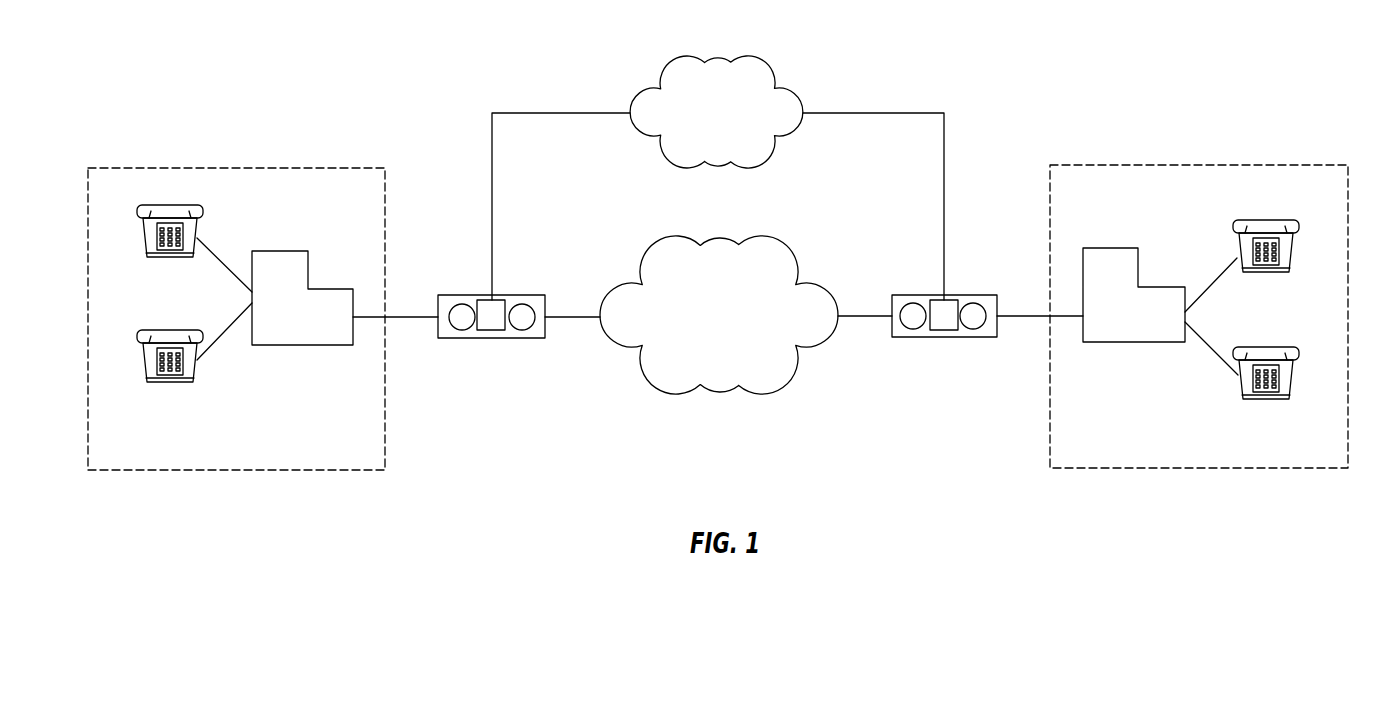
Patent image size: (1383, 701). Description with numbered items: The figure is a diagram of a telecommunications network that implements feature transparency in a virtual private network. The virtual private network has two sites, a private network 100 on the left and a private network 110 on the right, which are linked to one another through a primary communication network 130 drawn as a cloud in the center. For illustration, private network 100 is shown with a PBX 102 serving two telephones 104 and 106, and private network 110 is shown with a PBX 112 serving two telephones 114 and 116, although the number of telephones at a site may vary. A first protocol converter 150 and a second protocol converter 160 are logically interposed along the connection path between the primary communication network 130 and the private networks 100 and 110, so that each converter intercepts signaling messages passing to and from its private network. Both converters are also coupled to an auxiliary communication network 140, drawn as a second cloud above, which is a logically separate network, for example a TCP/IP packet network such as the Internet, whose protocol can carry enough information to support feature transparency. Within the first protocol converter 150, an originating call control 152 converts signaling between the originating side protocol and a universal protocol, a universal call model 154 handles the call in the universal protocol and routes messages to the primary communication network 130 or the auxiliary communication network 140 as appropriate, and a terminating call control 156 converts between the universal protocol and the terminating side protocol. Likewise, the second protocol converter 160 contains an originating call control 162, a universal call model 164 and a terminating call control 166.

The private network 100 is at (118, 165).
The PBX 102 is at (275, 251).
The telephone 104 is at (167, 260).
The telephone 106 is at (167, 385).
The private network 110 is at (1322, 160).
The PBX 112 is at (1107, 248).
The telephone 114 is at (1268, 275).
The telephone 116 is at (1268, 402).
The primary communication network 130 is at (757, 236).
The auxiliary communication network 140 is at (747, 53).
The first protocol converter 150 is at (510, 295).
The originating call control 152 is at (462, 330).
The universal call model 154 is at (483, 300).
The terminating call control 156 is at (520, 330).
The second protocol converter 160 is at (925, 295).
The originating call control 162 is at (915, 330).
The universal call model 164 is at (950, 300).
The terminating call control 166 is at (972, 330).